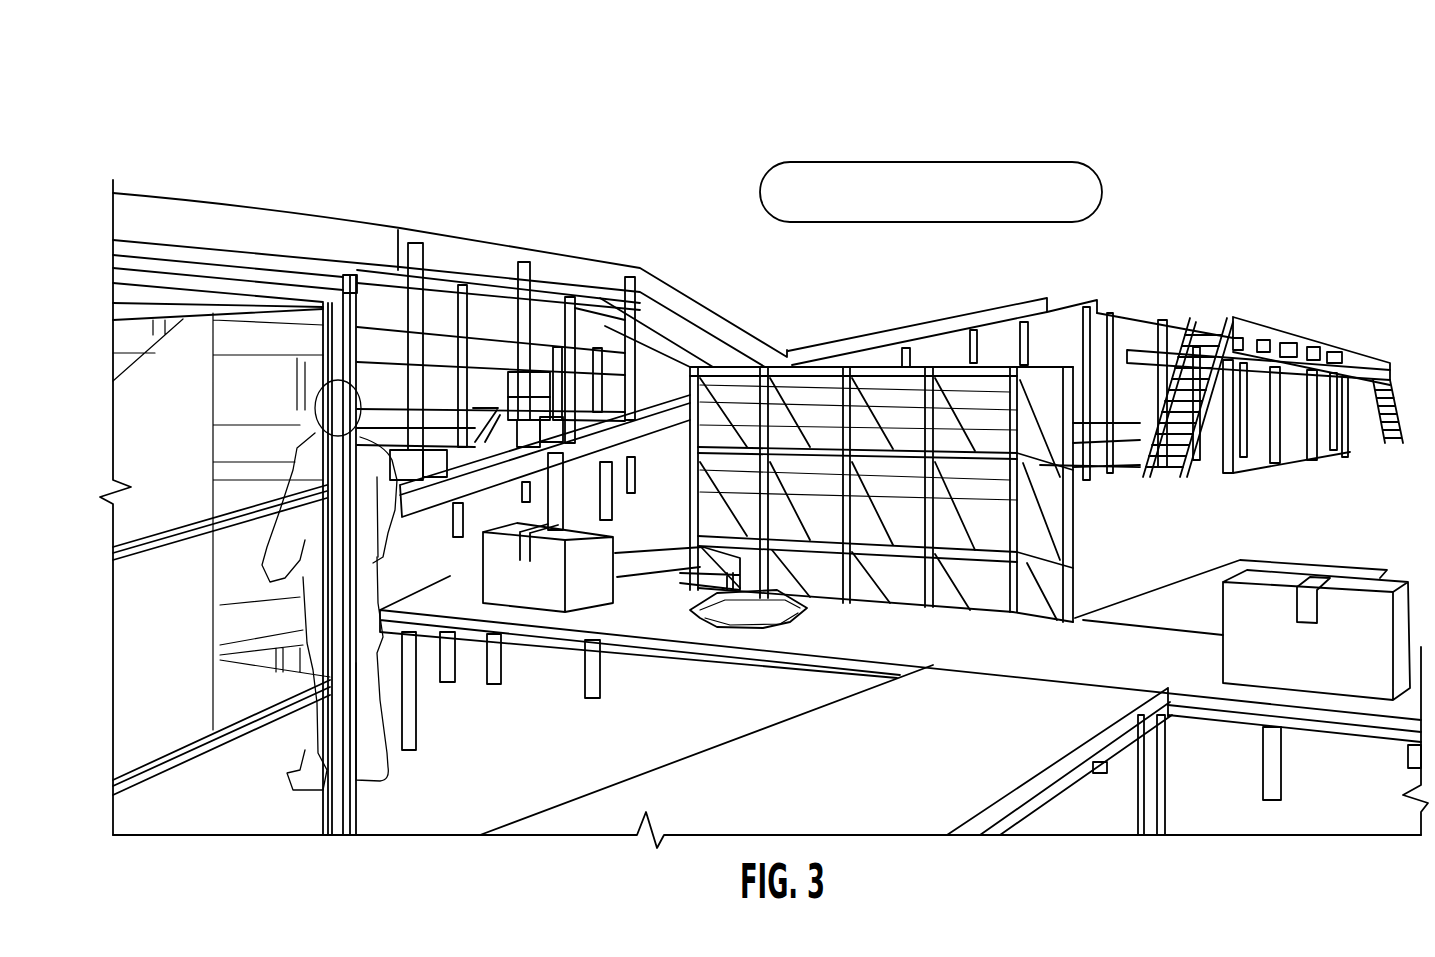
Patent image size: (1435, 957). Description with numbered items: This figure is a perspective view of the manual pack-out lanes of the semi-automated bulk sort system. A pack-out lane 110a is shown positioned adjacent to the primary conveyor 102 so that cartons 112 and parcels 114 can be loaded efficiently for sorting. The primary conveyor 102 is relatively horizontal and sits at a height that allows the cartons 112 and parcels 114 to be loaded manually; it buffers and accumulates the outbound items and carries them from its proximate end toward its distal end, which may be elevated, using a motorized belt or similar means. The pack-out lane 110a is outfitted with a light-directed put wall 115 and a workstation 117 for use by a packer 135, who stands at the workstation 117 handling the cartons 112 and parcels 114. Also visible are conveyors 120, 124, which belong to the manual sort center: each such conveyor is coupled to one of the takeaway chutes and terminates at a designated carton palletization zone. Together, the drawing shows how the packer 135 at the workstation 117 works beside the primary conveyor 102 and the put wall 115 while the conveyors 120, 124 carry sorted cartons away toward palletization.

The pack-out lane 110a is at (1115, 63).
The conveyor 124 is at (388, 340).
The conveyor 120 is at (535, 267).
The primary conveyor 102 is at (946, 322).
The light-directed put wall 115 is at (1050, 530).
The workstation 117 is at (677, 777).
The carton 112 is at (550, 603).
The parcel 114 is at (740, 622).
The packer 135 is at (390, 718).